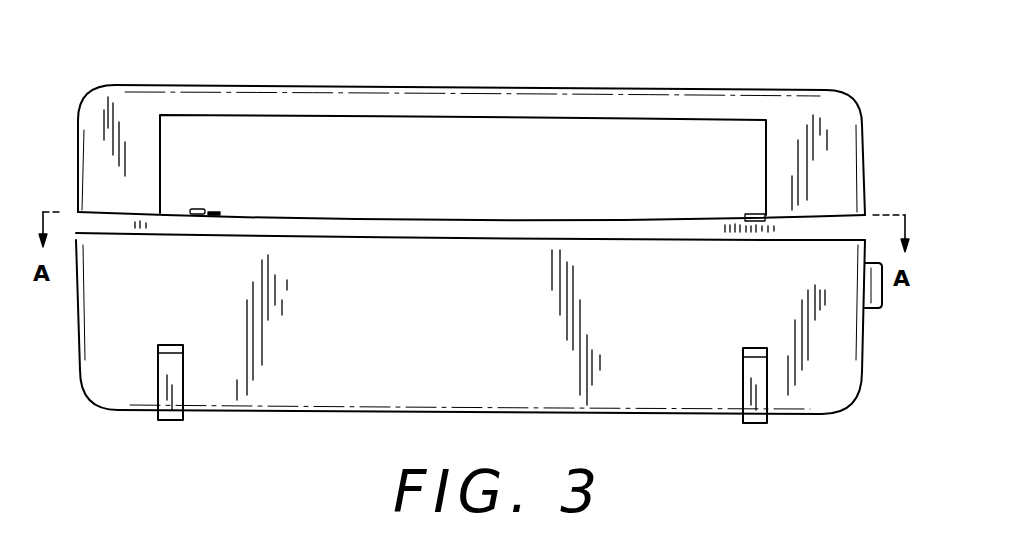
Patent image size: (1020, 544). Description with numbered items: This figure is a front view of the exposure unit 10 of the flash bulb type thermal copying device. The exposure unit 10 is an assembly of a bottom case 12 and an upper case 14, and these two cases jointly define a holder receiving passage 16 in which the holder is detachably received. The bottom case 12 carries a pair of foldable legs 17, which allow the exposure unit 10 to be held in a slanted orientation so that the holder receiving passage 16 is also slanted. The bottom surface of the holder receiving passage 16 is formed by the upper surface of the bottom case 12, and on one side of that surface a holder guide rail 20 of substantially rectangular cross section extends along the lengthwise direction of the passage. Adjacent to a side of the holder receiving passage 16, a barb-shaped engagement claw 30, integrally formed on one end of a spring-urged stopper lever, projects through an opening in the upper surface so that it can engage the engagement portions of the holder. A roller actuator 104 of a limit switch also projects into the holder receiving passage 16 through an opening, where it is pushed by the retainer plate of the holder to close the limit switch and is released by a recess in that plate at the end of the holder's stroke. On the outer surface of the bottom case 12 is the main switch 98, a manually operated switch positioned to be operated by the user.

The exposure unit 10 is at (868, 150).
The bottom case 12 is at (843, 358).
The upper case 14 is at (848, 190).
The holder receiving passage 16 is at (613, 124).
The foldable legs 17 is at (165, 370).
The holder guide rail 20 is at (197, 210).
The engagement claw 30 is at (748, 213).
The main switch 98 is at (882, 296).
The roller actuator 104 is at (215, 212).